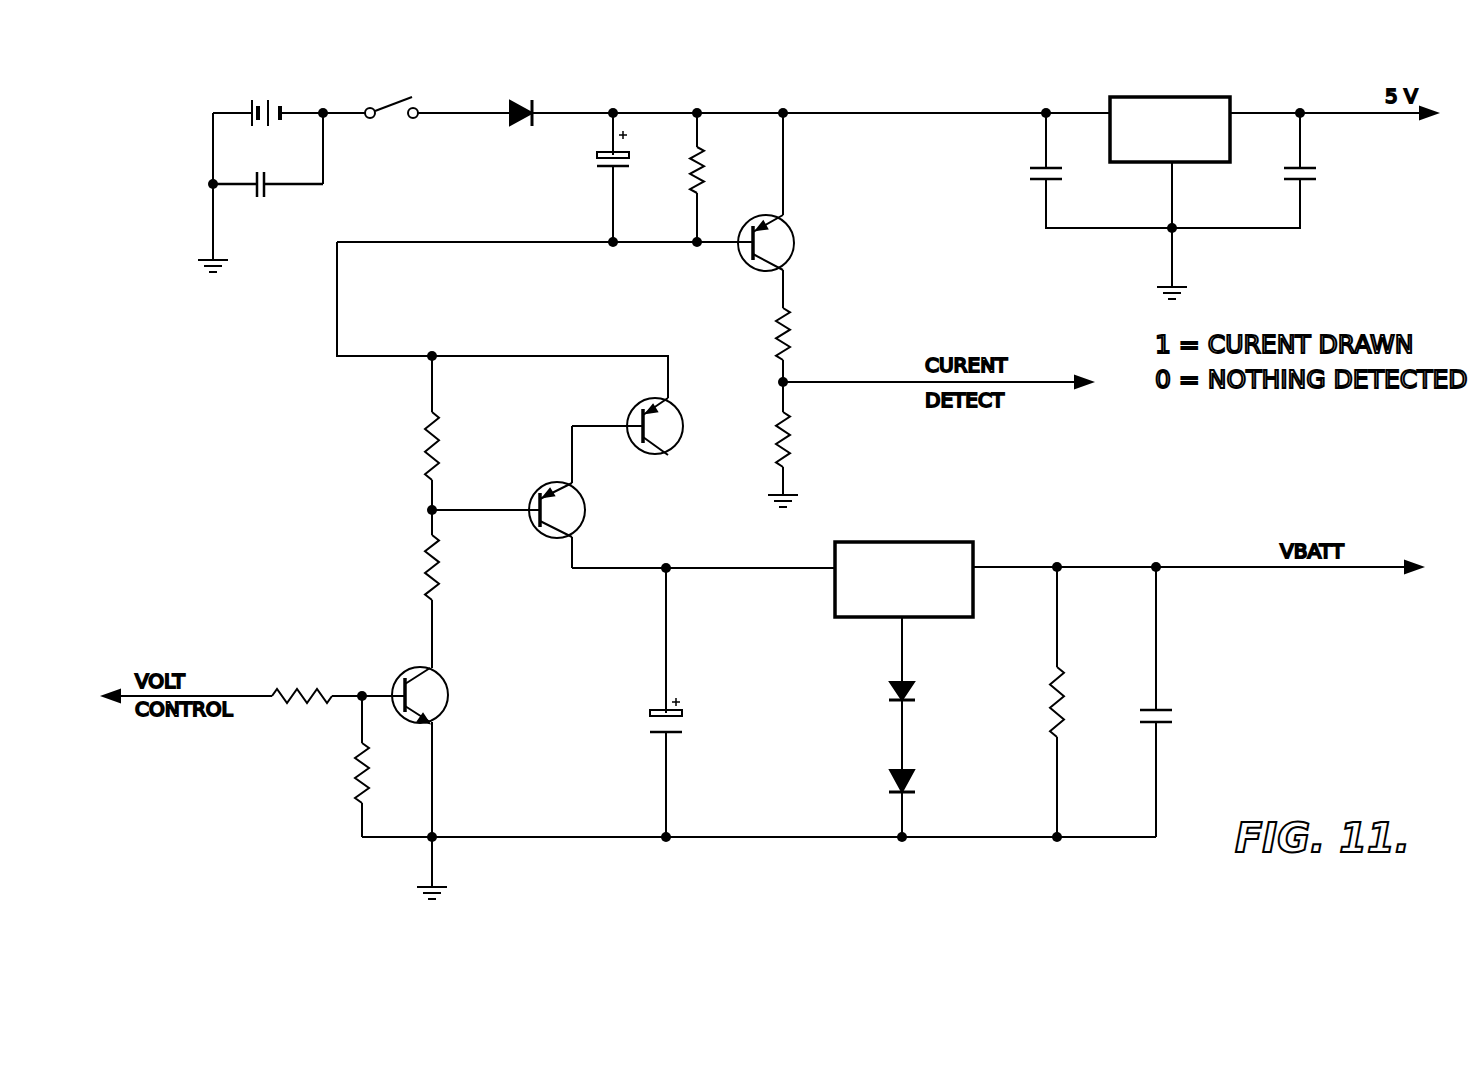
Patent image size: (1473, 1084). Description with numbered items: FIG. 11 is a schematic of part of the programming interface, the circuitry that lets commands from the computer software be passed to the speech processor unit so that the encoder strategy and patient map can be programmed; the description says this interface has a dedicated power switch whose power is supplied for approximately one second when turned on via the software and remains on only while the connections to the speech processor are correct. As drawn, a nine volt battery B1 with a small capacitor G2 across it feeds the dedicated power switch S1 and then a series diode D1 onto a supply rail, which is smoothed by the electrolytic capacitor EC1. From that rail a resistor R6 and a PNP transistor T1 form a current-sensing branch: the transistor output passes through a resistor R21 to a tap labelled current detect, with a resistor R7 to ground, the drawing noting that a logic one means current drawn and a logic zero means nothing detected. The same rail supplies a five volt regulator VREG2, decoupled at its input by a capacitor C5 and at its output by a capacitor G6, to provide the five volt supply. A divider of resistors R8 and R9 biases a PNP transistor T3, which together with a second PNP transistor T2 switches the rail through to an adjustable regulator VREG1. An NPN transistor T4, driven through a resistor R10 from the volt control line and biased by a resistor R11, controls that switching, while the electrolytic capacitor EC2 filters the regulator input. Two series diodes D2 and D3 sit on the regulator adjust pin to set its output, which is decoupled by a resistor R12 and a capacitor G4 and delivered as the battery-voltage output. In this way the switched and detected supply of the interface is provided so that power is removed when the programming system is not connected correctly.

The 9V battery B1 is at (268, 99).
The 0.1 uF capacitor G2 is at (268, 184).
The power switch S1 is at (421, 106).
The diode D1 is at (514, 99).
The 1000 uF electrolytic capacitor EC1 is at (583, 177).
The 10 ohm resistor R6 is at (719, 177).
The PNP transistor T1 is at (791, 243).
The 4K7 resistor R21 is at (806, 334).
The 4K7 resistor R7 is at (806, 439).
The 5 volt voltage regulator VREG2 is at (1174, 115).
The 0.3 uF capacitor C5 is at (1023, 174).
The 15n capacitor G6 is at (1323, 172).
The 10K resistor R8 is at (456, 446).
The 10K resistor R9 is at (453, 567).
The PNP transistor T2 is at (675, 423).
The PNP transistor T3 is at (576, 516).
The NPN transistor T4 is at (442, 696).
The 10K resistor R10 is at (302, 691).
The 10K resistor R11 is at (386, 773).
The 220 uF electrolytic capacitor EC2 is at (697, 721).
The LM317K voltage regulator VREG1 is at (905, 562).
The diode LM04BCZM D2 is at (963, 691).
The diode D3 is at (921, 770).
The 100 ohm resistor R12 is at (1086, 701).
The 15n capacitor G4 is at (1179, 716).